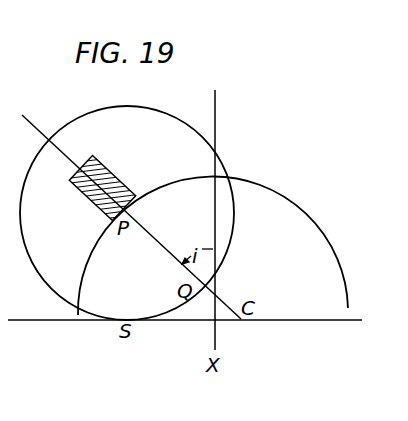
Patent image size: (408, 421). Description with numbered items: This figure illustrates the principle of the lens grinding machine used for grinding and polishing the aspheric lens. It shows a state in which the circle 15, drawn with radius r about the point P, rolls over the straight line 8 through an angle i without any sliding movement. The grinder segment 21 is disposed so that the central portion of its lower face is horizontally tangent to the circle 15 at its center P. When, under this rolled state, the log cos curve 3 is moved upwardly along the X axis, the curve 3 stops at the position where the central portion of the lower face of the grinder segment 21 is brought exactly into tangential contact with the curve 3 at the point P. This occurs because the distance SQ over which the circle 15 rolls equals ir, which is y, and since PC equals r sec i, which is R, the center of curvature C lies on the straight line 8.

The log cos curve 3 is at (288, 196).
The straight line 8 is at (31, 318).
The circle 15 is at (179, 121).
The grinder segment 21 is at (112, 180).